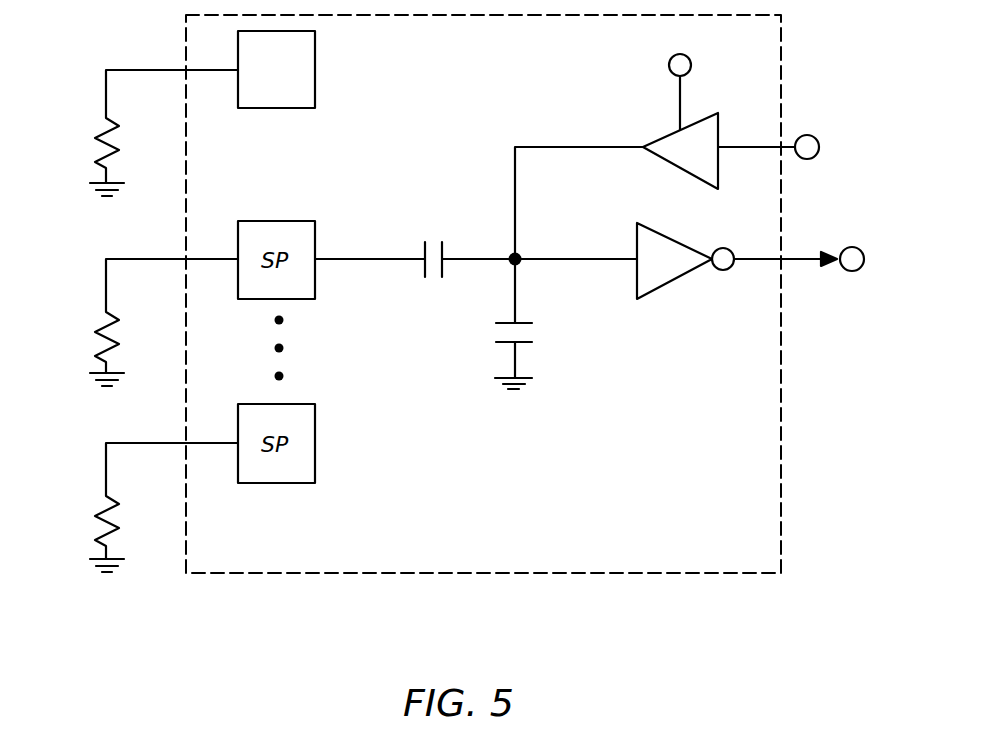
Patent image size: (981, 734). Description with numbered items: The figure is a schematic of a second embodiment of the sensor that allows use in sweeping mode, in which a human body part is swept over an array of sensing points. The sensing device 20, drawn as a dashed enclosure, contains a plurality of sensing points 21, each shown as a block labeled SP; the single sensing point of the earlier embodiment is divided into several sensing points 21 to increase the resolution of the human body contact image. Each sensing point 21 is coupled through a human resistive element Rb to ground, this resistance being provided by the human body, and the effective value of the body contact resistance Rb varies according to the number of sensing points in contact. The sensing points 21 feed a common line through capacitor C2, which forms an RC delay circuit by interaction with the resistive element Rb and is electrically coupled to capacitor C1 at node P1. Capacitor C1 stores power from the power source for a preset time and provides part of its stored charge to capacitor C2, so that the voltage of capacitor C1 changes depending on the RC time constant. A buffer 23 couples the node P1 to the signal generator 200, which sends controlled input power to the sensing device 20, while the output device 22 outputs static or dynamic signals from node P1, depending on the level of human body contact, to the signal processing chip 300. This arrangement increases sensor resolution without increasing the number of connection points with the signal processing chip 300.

The sensing device 20 is at (438, 573).
The sensing point 21 is at (273, 108).
The output device 22 is at (682, 278).
The tri-state input buffer 23 is at (724, 128).
The signal generator 200 is at (818, 135).
The signal processing chip 300 is at (855, 271).
The node P1 is at (522, 256).
The capacitor C1 is at (533, 353).
The capacitor C2 is at (442, 243).
The human resistive element Rb is at (146, 321).